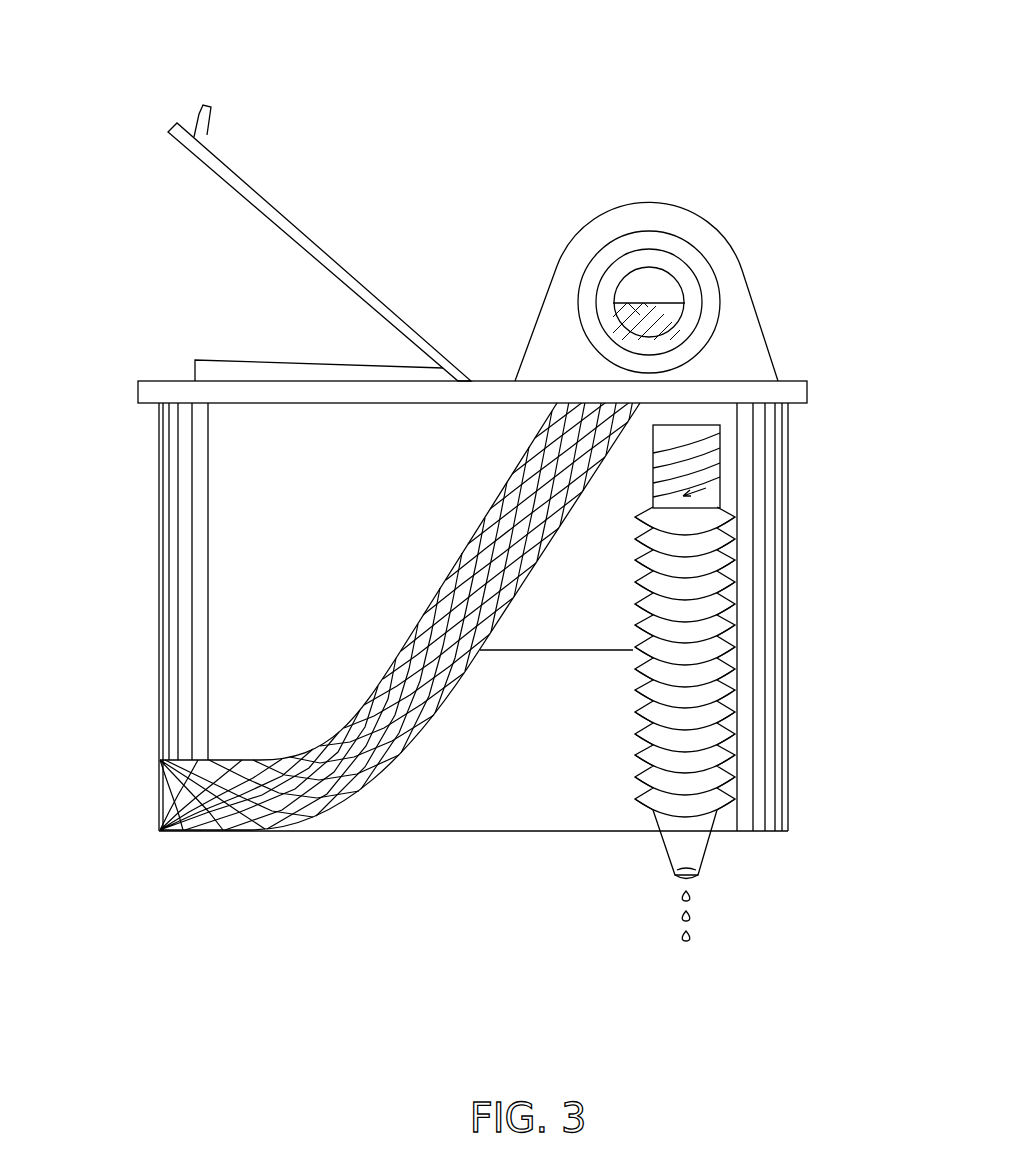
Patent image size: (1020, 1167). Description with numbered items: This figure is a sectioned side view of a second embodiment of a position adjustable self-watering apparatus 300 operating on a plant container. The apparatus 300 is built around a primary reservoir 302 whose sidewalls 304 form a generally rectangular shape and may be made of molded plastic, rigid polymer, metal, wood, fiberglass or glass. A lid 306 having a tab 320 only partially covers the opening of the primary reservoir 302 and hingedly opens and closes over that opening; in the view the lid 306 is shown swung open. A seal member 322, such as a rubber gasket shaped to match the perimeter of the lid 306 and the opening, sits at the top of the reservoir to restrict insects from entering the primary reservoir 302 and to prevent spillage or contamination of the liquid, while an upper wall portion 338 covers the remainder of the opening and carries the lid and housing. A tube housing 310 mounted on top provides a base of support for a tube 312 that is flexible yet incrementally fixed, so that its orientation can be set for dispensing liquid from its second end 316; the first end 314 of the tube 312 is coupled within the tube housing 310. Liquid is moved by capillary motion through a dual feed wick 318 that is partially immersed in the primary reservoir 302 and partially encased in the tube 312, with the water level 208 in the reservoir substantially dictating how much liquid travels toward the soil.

The position adjustable self-watering apparatus 300 is at (765, 90).
The primary reservoir 302 is at (140, 562).
The sidewalls 304 is at (788, 637).
The lid 306 is at (333, 250).
The tube housing 310 is at (608, 212).
The tube 312 is at (735, 515).
The first end 314 is at (720, 468).
The second end 316 is at (697, 845).
The dual feed wick 318 is at (664, 301).
The tab 320 is at (205, 104).
The seal member 322 is at (260, 370).
The top plate 338 is at (795, 378).
The water level 208 is at (572, 651).